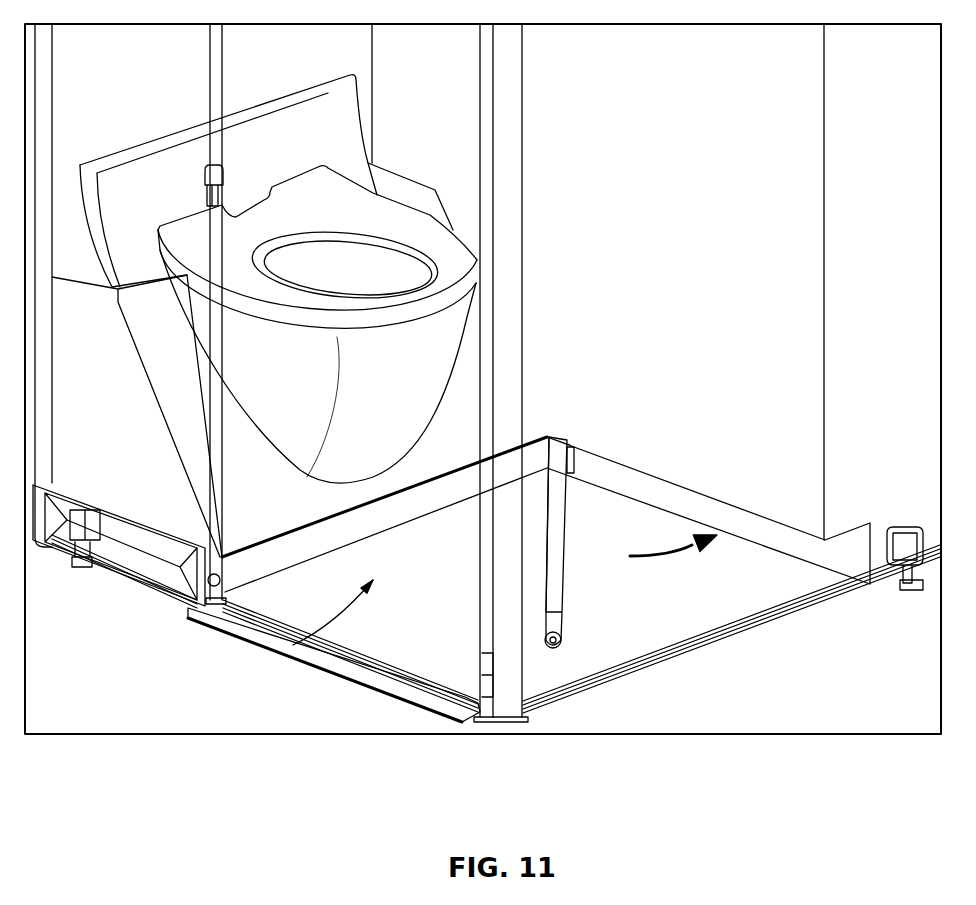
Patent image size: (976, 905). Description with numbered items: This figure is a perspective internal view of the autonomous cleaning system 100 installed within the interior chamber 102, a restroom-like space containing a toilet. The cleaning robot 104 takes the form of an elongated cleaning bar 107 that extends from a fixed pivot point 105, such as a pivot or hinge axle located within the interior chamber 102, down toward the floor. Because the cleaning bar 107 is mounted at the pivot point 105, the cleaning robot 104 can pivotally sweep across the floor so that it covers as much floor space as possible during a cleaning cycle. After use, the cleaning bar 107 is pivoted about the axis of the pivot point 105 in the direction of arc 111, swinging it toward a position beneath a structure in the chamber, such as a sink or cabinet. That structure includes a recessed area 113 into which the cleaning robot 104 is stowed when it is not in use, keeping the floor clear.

The autonomous cleaning system 100 is at (577, 563).
The interior chamber 102 is at (290, 648).
The cleaning robot 104 is at (565, 527).
The pivot point 105 is at (573, 455).
The cleaning bar 107 is at (555, 500).
The arc 111 is at (670, 557).
The recessed area 113 is at (852, 553).